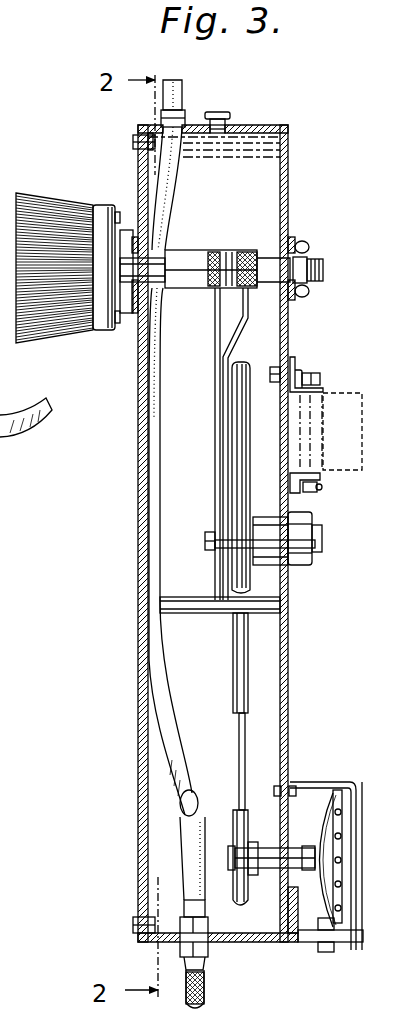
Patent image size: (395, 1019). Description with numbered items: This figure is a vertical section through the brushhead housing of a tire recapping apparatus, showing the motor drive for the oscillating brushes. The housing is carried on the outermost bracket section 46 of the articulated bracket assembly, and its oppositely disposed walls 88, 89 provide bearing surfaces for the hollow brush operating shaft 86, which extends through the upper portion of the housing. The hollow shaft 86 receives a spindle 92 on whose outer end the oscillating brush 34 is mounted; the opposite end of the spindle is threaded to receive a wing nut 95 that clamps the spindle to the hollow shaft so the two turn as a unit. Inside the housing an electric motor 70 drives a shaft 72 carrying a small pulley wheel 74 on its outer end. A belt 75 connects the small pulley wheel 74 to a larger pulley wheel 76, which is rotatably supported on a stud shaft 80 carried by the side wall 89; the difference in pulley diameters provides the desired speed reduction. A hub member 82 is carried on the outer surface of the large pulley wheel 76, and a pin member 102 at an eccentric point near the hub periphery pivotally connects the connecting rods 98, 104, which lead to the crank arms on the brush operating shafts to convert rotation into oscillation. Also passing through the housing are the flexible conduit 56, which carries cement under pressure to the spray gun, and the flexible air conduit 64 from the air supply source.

The oscillating brush 34 is at (44, 192).
The cabinet wall 88 is at (140, 172).
The side wall 89 is at (288, 160).
The hollow brush operating shaft 86 is at (191, 250).
The wing nut 95 is at (304, 241).
The spindle 92 is at (326, 258).
The connecting rod 104 is at (215, 344).
The connecting rod 98 is at (262, 338).
The bracket section 46 is at (343, 391).
The pin member 102 is at (205, 545).
The stud shaft 80 is at (320, 545).
The hub member 82 is at (230, 580).
The large pulley wheel 76 is at (233, 660).
The flexible conduit 56 is at (170, 710).
The belt 75 is at (238, 738).
The small pulley wheel 74 is at (230, 818).
The shaft 72 is at (276, 845).
The electric motor 70 is at (332, 812).
The flexible conduit 64 is at (192, 863).